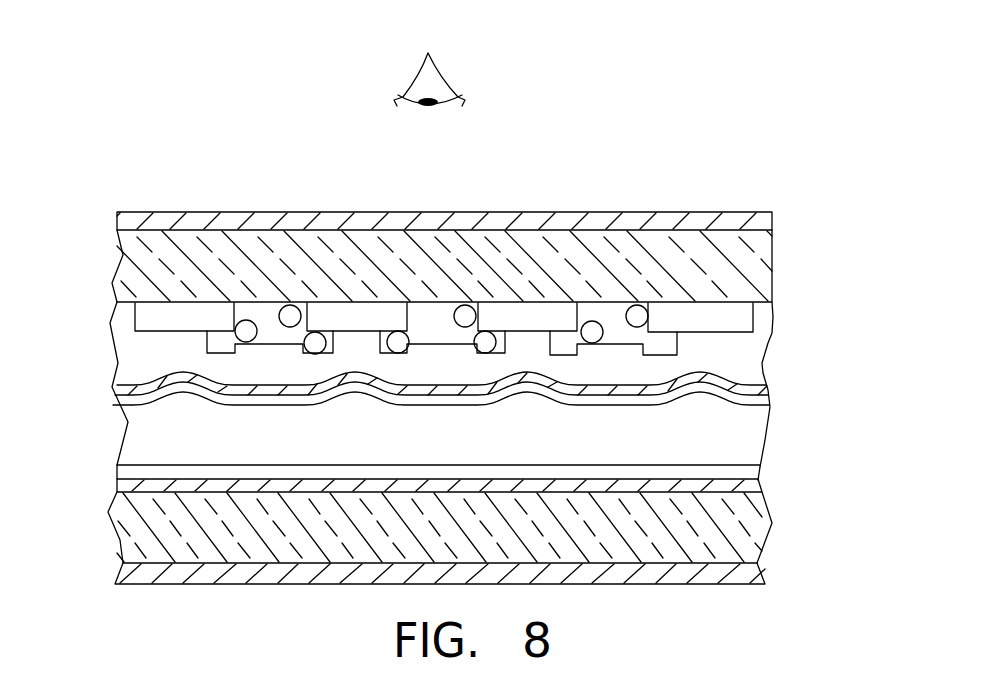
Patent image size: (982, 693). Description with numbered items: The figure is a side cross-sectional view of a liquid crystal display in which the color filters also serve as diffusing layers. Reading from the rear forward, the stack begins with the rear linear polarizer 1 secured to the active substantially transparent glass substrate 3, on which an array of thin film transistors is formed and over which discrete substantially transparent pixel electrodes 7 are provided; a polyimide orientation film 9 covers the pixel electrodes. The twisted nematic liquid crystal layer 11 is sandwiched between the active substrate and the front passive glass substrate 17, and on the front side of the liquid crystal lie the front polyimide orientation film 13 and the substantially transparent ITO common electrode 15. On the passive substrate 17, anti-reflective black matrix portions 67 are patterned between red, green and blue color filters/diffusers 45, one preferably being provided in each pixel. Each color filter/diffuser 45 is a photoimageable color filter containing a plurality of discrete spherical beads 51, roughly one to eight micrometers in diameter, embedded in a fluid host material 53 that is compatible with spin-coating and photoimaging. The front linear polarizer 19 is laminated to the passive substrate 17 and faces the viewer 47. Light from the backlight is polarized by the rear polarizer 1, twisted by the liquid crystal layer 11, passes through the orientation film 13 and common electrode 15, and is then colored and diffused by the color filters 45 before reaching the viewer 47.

The rear linear polarizer 1 is at (755, 580).
The active substantially transparent glass substrate 3 is at (748, 522).
The pixel electrodes 7 is at (117, 485).
The polyimide orientation film 9 is at (748, 471).
The twisted nematic liquid crystal layer 11 is at (748, 438).
The front polyimide orientation film 13 is at (740, 390).
The front common conductive electrode 15 is at (707, 373).
The passive substantially transparent glass substrate 17 is at (762, 262).
The front linear polarizer 19 is at (760, 220).
The color filter/diffuser 45 is at (267, 307).
The viewer 47 is at (435, 63).
The spherical beads 51 is at (320, 354).
The host material 53 is at (210, 342).
The anti-reflective black matrix portions 67 is at (497, 307).